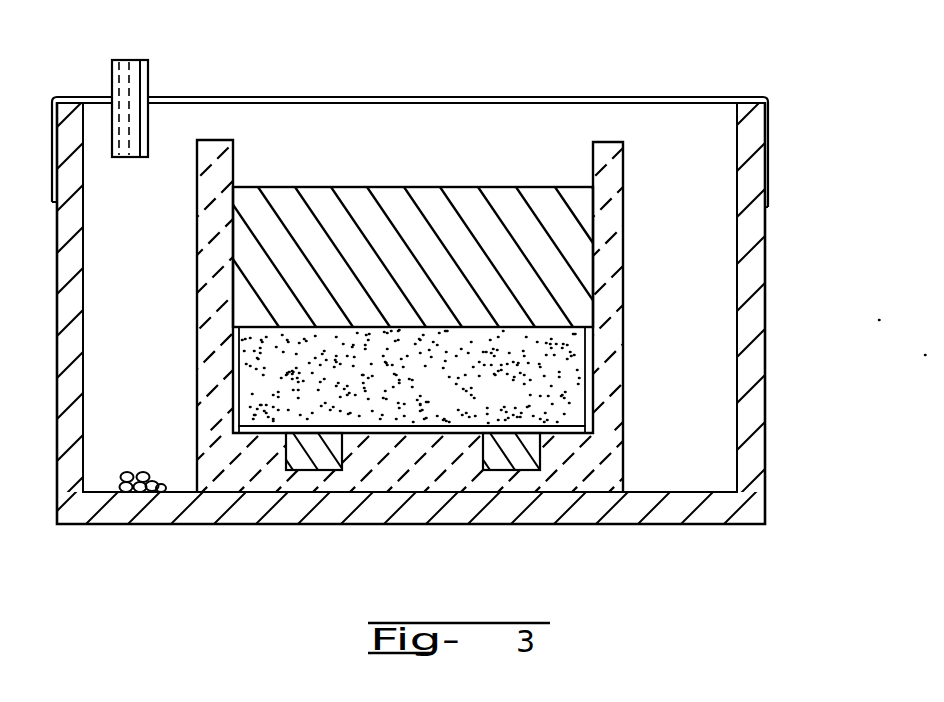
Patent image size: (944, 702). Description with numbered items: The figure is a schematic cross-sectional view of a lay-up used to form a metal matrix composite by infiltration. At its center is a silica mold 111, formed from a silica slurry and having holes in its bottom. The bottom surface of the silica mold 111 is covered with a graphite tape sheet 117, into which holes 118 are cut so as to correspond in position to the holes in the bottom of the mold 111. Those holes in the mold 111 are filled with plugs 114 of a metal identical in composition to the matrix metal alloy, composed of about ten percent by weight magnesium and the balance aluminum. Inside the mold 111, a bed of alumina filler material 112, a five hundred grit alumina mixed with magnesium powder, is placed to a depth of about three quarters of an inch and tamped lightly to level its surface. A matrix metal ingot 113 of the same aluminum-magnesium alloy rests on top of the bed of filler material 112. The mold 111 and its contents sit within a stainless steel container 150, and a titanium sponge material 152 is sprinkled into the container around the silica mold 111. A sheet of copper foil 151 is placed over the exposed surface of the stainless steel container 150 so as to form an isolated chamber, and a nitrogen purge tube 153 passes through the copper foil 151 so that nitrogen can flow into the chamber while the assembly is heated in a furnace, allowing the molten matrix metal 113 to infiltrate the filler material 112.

The silica mold 111 is at (623, 198).
The alumina filler material 112 is at (586, 377).
The matrix metal ingot 113 is at (426, 198).
The plugs 114 is at (312, 455).
The graphite tape sheet 117 is at (584, 431).
The holes 118 is at (492, 472).
The stainless steel container 150 is at (752, 360).
The sheet of copper foil 151 is at (383, 98).
The titanium sponge material 152 is at (134, 492).
The nitrogen purge tube 153 is at (161, 71).